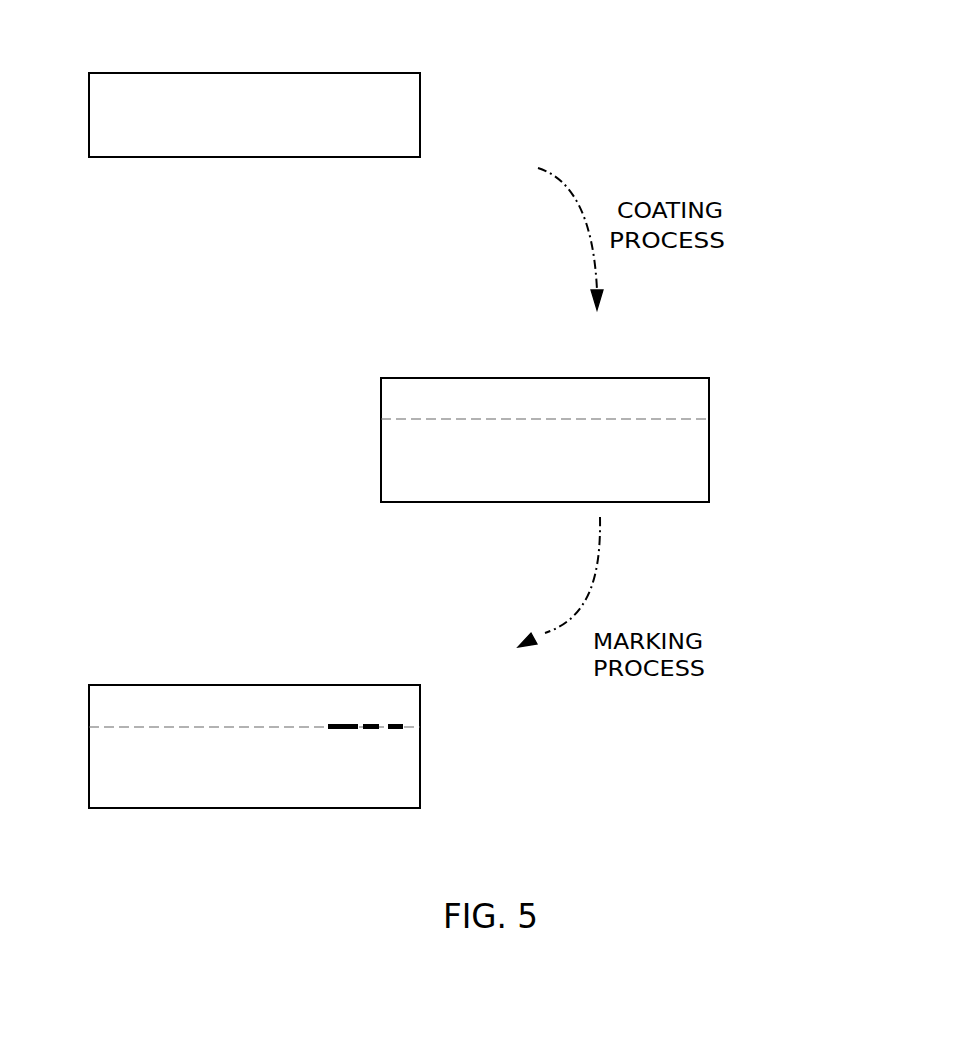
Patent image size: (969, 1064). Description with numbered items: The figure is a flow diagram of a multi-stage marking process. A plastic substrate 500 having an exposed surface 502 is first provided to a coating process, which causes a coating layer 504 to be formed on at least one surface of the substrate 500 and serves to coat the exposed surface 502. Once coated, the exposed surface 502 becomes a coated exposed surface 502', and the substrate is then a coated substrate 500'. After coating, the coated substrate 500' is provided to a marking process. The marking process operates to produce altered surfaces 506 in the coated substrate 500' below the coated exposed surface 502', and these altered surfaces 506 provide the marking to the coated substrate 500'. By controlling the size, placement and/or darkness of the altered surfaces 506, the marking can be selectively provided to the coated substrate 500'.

The substrate 500 is at (297, 115).
The exposed surface 502 is at (254, 44).
The coated substrate 500' is at (441, 593).
The coated exposed surface 502' is at (399, 513).
The coating layer 504 is at (695, 398).
The altered surfaces 506 is at (350, 722).